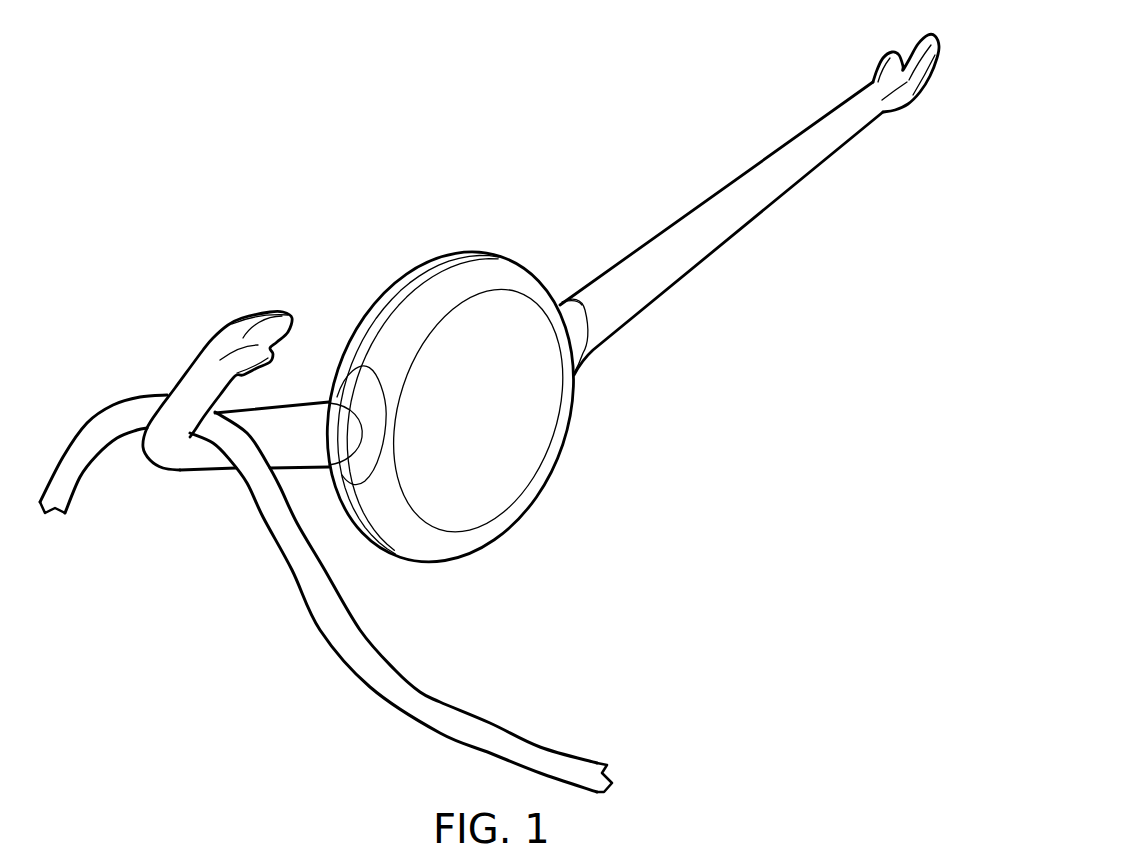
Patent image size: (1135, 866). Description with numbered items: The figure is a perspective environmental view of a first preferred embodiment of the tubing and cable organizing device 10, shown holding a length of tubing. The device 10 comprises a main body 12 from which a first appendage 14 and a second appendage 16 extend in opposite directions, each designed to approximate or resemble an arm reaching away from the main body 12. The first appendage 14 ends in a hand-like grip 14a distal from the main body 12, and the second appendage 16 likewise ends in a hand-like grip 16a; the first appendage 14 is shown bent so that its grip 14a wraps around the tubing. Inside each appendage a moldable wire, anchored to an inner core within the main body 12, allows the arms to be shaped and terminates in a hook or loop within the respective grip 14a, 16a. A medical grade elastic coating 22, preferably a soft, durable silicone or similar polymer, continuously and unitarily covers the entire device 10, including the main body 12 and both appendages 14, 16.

The tubing and cable organizing device 10 is at (386, 226).
The main body 12 is at (510, 270).
The first appendage 14 is at (193, 470).
The hand-like grip 14a is at (230, 325).
The second appendage 16 is at (720, 250).
The hand-like grip 16a is at (888, 52).
The elastic coating 22 is at (443, 550).